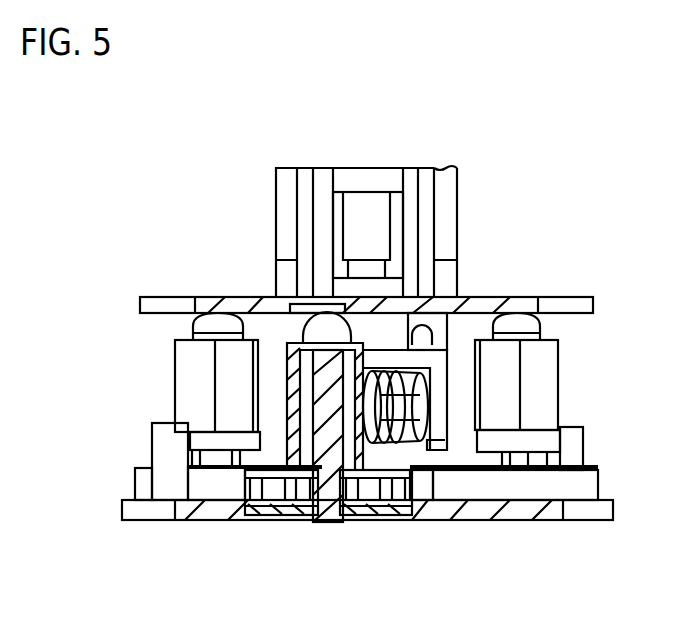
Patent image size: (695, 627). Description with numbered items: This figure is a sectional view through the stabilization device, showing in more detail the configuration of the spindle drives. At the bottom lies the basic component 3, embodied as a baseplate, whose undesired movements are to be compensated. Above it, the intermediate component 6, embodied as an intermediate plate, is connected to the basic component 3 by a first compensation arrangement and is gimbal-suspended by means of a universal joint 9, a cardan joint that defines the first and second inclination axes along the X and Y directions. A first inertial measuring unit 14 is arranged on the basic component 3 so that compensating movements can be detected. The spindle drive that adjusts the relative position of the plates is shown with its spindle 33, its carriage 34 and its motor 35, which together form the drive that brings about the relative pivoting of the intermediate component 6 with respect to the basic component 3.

The basic component 3 is at (613, 510).
The intermediate component 6 is at (593, 304).
The universal joint 9 is at (432, 362).
The first inertial measuring unit 14 is at (336, 520).
The spindle 33 is at (330, 437).
The carriage 34 is at (300, 442).
The motor 35 is at (410, 505).